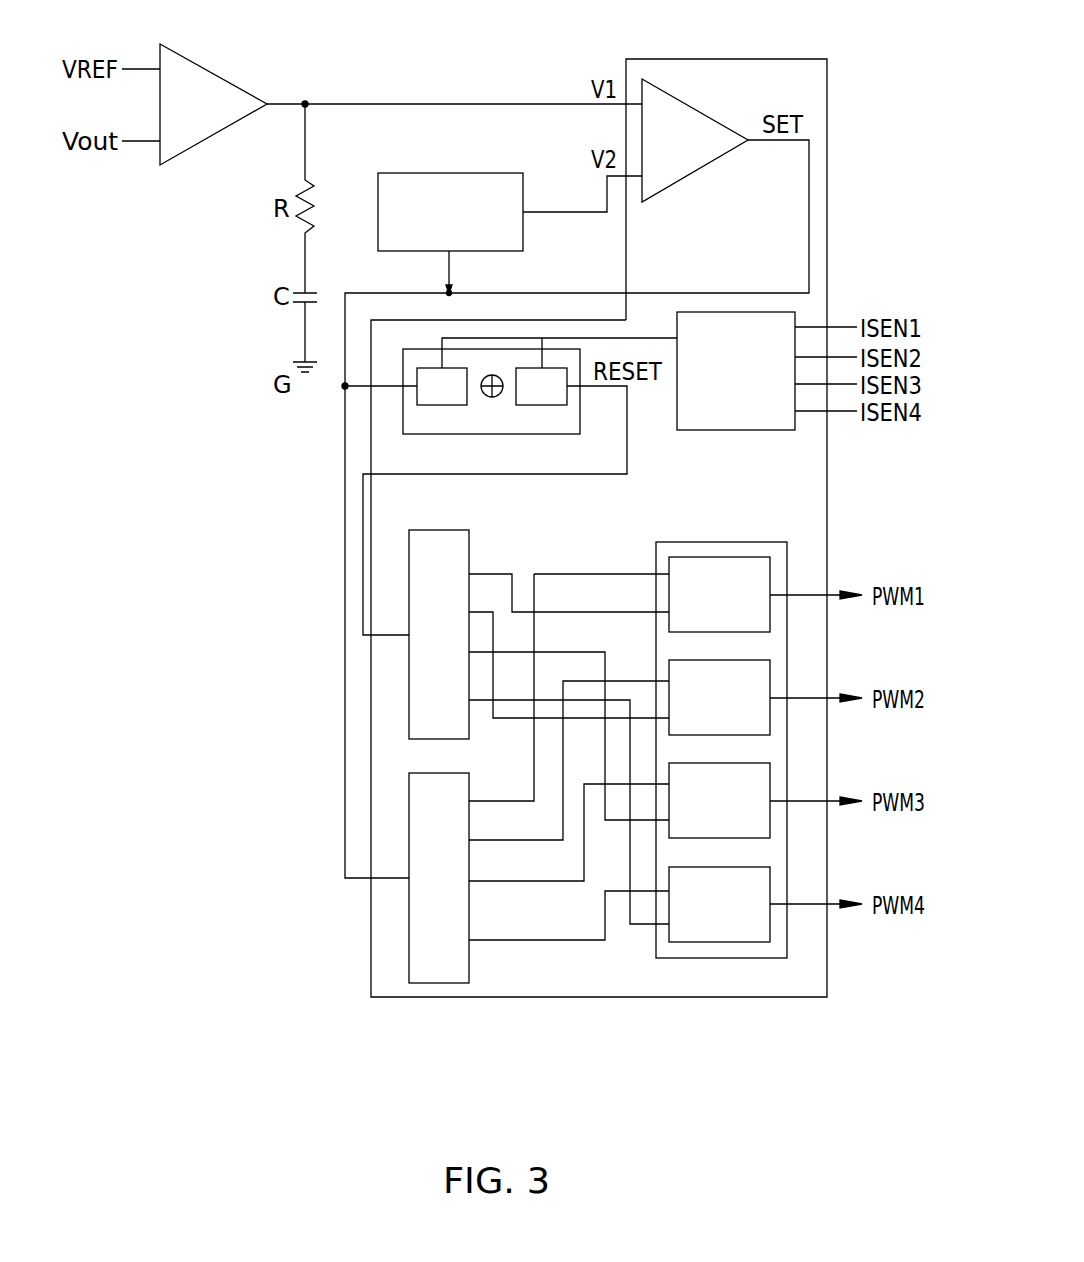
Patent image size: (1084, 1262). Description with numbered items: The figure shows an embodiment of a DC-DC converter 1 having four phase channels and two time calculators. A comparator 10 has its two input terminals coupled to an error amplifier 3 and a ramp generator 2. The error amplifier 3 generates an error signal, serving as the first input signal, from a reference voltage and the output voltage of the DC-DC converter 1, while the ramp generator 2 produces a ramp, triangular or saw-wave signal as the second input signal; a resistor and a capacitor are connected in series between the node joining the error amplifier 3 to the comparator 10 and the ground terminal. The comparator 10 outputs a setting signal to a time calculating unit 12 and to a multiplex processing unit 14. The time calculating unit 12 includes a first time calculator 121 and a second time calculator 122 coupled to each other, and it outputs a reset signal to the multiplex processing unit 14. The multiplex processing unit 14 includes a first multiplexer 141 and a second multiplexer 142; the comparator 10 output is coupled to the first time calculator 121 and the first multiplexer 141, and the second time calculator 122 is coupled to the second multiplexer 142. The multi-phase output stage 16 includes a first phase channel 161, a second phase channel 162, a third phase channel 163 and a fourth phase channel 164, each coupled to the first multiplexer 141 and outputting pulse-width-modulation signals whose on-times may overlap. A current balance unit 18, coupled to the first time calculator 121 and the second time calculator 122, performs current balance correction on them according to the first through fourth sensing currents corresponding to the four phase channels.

The DC-DC converter 1 is at (735, 59).
The ramp generator 2 is at (442, 229).
The error amplifier 3 is at (189, 119).
The comparator 10 is at (663, 155).
The time calculating unit 12 is at (478, 431).
The first time calculator 121 is at (422, 399).
The second time calculator 122 is at (522, 399).
The multiplex processing unit 14 is at (409, 793).
The first multiplexer 141 is at (419, 891).
The second multiplexer 142 is at (419, 650).
The multi-phase output stage 16 is at (737, 542).
The first phase channel 161 is at (699, 607).
The second phase channel 162 is at (699, 711).
The third phase channel 163 is at (699, 814).
The fourth phase channel 164 is at (699, 917).
The current balance unit 18 is at (721, 386).